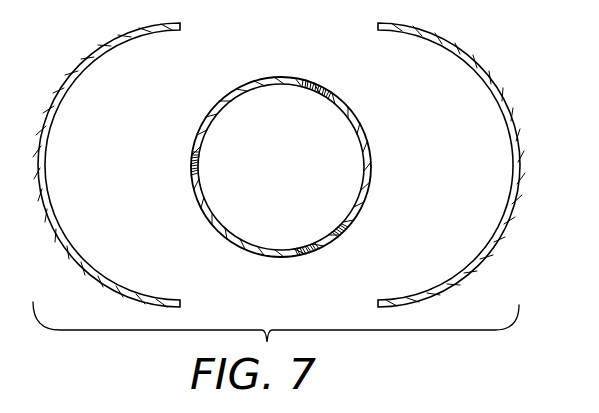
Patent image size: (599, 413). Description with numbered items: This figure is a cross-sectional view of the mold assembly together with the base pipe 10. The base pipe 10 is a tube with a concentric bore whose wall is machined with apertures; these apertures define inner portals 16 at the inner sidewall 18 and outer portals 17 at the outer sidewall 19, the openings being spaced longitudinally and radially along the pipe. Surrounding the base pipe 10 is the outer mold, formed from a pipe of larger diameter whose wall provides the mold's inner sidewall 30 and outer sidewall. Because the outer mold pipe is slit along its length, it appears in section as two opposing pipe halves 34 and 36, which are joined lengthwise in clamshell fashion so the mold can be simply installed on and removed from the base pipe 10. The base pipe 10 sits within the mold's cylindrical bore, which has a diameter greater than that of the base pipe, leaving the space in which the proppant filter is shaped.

The base pipe 10 is at (358, 126).
The inner portals 16 is at (320, 238).
The outer portals 17 is at (330, 237).
The inner sidewall 18 is at (360, 175).
The outer sidewall 19 is at (364, 188).
The inner sidewall of the outer mold 30 is at (86, 62).
The pipe half 34 is at (45, 140).
The pipe half 36 is at (458, 278).